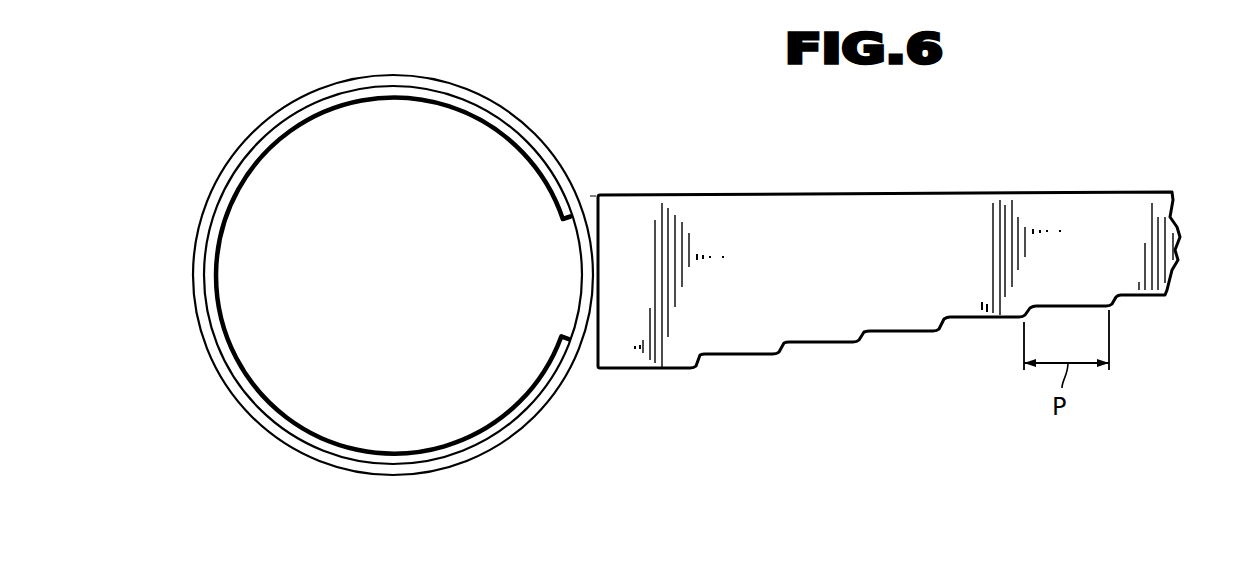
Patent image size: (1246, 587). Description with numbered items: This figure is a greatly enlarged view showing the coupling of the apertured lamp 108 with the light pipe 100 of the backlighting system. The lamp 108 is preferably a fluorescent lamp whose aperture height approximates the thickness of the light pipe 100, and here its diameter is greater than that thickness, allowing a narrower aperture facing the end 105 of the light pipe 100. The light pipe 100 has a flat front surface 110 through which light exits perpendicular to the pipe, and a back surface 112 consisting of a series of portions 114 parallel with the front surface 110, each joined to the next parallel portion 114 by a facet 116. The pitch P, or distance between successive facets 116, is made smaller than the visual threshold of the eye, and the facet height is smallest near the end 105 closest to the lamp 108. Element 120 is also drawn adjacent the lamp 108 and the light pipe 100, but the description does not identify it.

The light pipe 100 is at (867, 268).
The end 105 is at (592, 191).
The apertured lamp 108 is at (468, 462).
The front surface 110 is at (853, 190).
The back surface 112 is at (845, 346).
The parallel portions 114 is at (650, 368).
The facets 116 is at (702, 368).
The split ring 120 is at (577, 368).